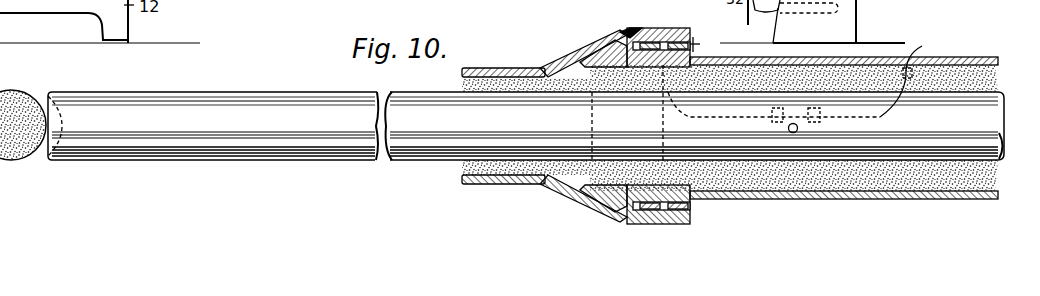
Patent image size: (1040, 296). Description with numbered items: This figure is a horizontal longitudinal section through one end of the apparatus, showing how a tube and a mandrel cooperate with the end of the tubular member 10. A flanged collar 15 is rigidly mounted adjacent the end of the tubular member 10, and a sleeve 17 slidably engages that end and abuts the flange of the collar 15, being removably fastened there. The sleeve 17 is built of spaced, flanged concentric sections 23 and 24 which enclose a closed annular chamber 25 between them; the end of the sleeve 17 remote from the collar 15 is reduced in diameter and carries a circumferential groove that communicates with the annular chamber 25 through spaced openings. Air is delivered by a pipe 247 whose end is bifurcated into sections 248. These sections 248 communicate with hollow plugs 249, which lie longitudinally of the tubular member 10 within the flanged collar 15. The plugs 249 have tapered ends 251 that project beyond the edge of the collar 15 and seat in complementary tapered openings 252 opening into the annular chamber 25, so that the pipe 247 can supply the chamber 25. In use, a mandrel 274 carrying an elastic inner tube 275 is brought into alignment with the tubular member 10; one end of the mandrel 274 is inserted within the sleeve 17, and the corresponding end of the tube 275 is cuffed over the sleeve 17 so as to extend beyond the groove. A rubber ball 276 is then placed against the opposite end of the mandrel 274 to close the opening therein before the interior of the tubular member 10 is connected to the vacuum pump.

The tubular member 10 is at (963, 57).
The flanged collar 15 is at (731, 45).
The sleeve 17 is at (535, 65).
The concentric section 23 is at (565, 95).
The concentric section 24 is at (508, 68).
The annular chamber 25 is at (606, 42).
The pipe 247 is at (915, 72).
The bifurcated sections of pipe 248 is at (679, 119).
The hollow plug 249 is at (690, 42).
The tapered end 251 is at (650, 42).
The tapered opening 252 is at (627, 32).
The mandrel 274 is at (143, 91).
The elastic inner tube 275 is at (310, 91).
The rubber ball 276 is at (29, 157).